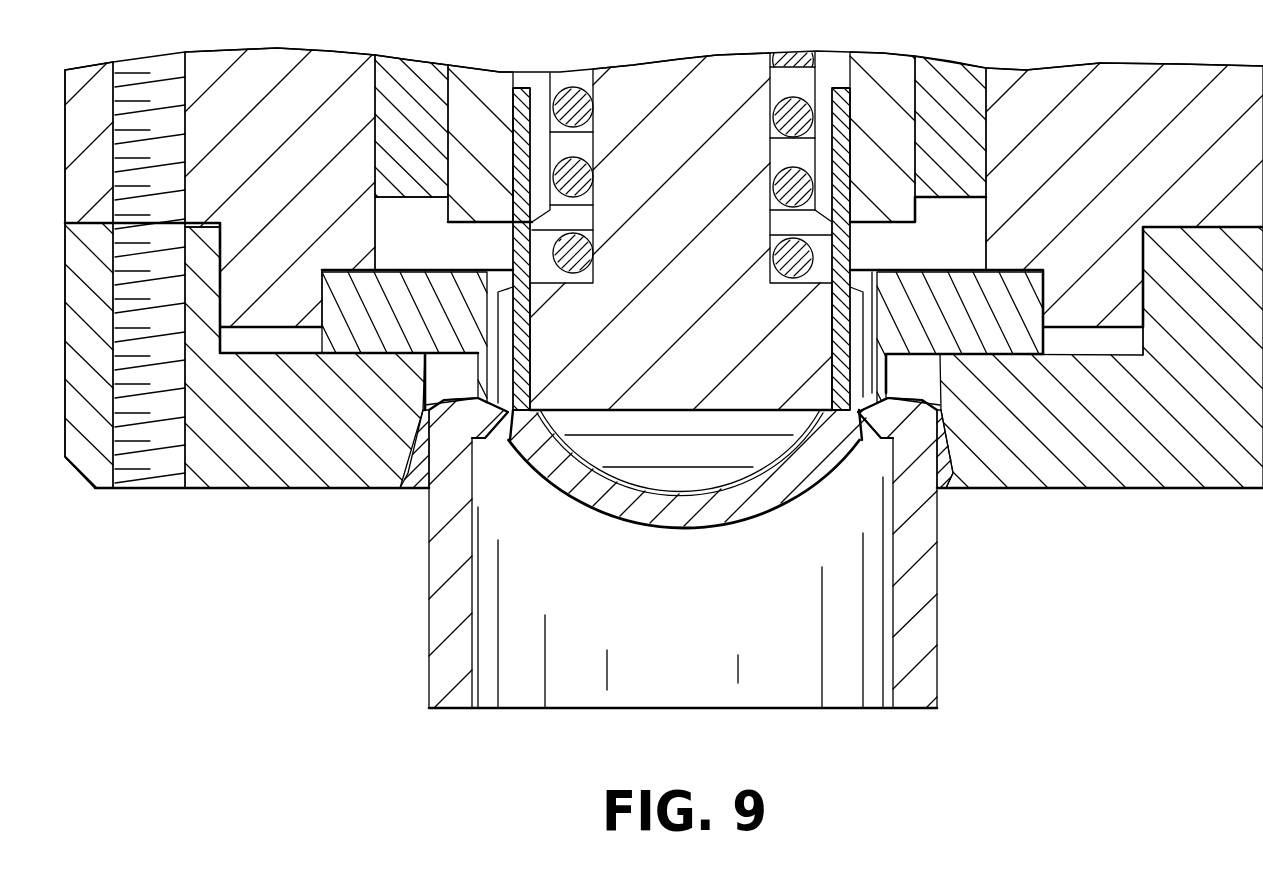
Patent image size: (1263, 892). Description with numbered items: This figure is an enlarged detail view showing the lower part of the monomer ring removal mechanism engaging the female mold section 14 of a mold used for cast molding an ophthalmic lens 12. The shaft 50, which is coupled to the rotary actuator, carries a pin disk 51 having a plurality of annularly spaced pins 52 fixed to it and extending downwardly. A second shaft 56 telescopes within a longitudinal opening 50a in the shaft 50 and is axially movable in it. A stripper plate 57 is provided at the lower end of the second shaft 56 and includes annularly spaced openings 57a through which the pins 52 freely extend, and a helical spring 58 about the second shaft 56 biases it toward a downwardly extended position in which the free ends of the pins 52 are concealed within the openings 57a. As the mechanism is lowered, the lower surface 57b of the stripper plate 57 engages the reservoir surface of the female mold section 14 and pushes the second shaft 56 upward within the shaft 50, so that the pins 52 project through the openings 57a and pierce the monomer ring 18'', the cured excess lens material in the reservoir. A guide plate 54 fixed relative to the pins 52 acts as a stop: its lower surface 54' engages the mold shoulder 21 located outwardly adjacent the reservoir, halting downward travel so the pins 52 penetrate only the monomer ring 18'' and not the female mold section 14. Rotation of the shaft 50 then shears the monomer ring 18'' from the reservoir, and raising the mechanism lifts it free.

The ophthalmic lens 12 is at (715, 486).
The female mold section 14 is at (928, 568).
The monomer ring 18'' is at (711, 443).
The mold shoulder 21 is at (430, 533).
The shaft 50 is at (872, 78).
The longitudinal opening 50a is at (795, 55).
The pin disk 51 is at (890, 212).
The pins 52 is at (522, 372).
The guide plate 54 is at (682, 337).
The lower surface of guide plate 54' is at (660, 468).
The second shaft 56 is at (627, 102).
The stripper plate 57 is at (630, 400).
The openings 57a is at (820, 322).
The lower surface of stripper plate 57b is at (673, 413).
The helical spring 58 is at (572, 88).